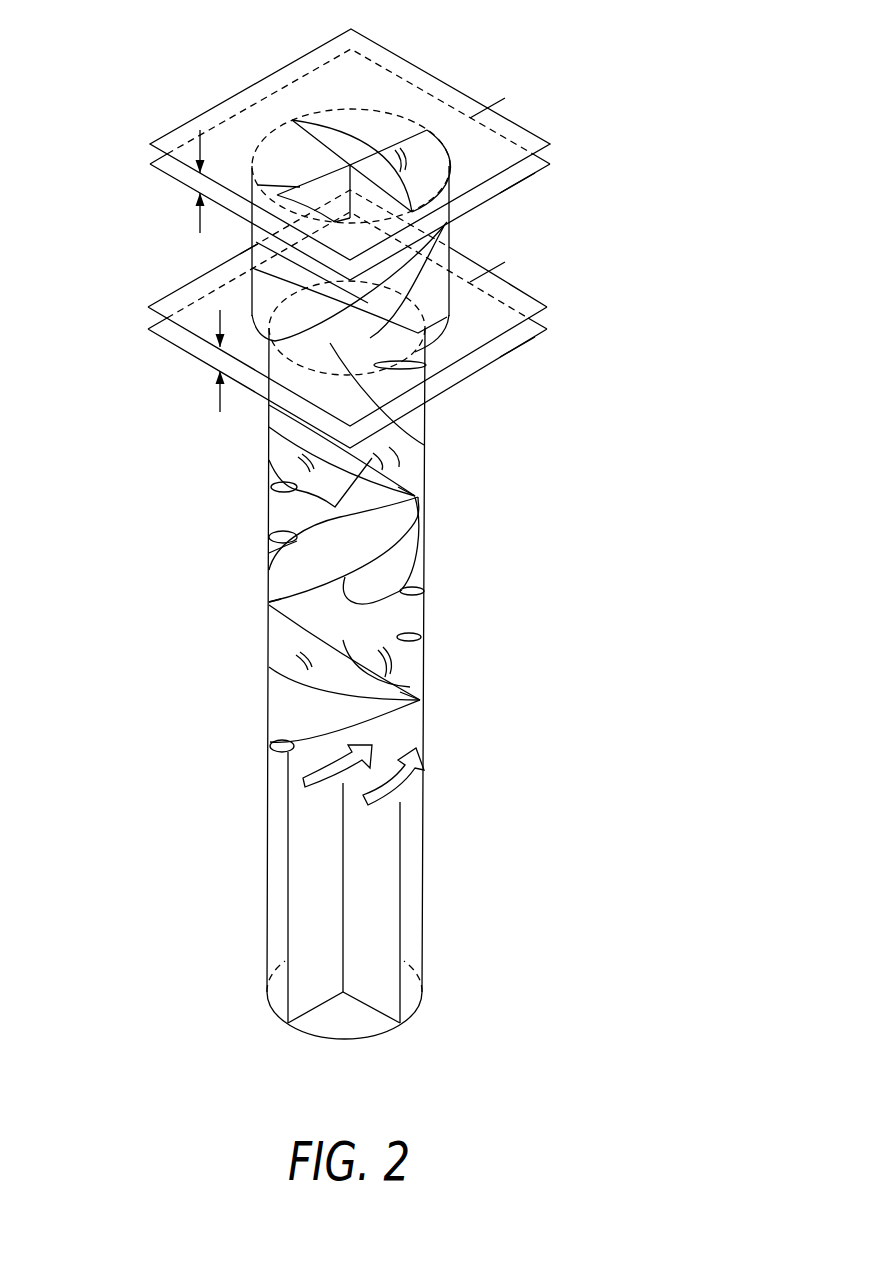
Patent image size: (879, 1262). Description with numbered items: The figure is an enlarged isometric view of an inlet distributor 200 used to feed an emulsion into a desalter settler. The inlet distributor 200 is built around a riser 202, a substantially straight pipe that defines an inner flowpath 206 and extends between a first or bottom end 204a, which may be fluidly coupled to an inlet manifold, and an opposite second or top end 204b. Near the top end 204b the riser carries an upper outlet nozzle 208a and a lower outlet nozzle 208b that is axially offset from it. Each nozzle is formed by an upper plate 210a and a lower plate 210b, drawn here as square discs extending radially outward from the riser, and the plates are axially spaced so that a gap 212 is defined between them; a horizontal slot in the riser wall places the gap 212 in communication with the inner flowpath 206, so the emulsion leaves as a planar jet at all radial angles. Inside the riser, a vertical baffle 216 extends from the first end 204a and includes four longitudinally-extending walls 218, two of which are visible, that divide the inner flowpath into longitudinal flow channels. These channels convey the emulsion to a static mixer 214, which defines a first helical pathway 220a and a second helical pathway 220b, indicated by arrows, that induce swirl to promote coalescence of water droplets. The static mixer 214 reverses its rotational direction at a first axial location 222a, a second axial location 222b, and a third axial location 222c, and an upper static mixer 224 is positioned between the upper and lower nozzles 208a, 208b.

The inlet distributor 200 is at (191, 49).
The riser 202 is at (260, 685).
The first end 204a is at (432, 991).
The second end 204b is at (409, 114).
The inner flowpath 206 is at (336, 1023).
The upper outlet nozzle 208a is at (168, 183).
The lower outlet nozzle 208b is at (185, 362).
The upper plate 210a is at (502, 153).
The lower plate 210b is at (518, 186).
The gap 212 is at (200, 145).
The static mixer 214 is at (258, 555).
The vertical baffle 216 is at (276, 863).
The longitudinally-extending walls 218 is at (378, 888).
The first helical pathway 220a is at (302, 779).
The second helical pathway 220b is at (418, 774).
The first axial location 222a is at (421, 700).
The second axial location 222b is at (270, 599).
The third axial location 222c is at (421, 496).
The upper static mixer 224 is at (256, 248).